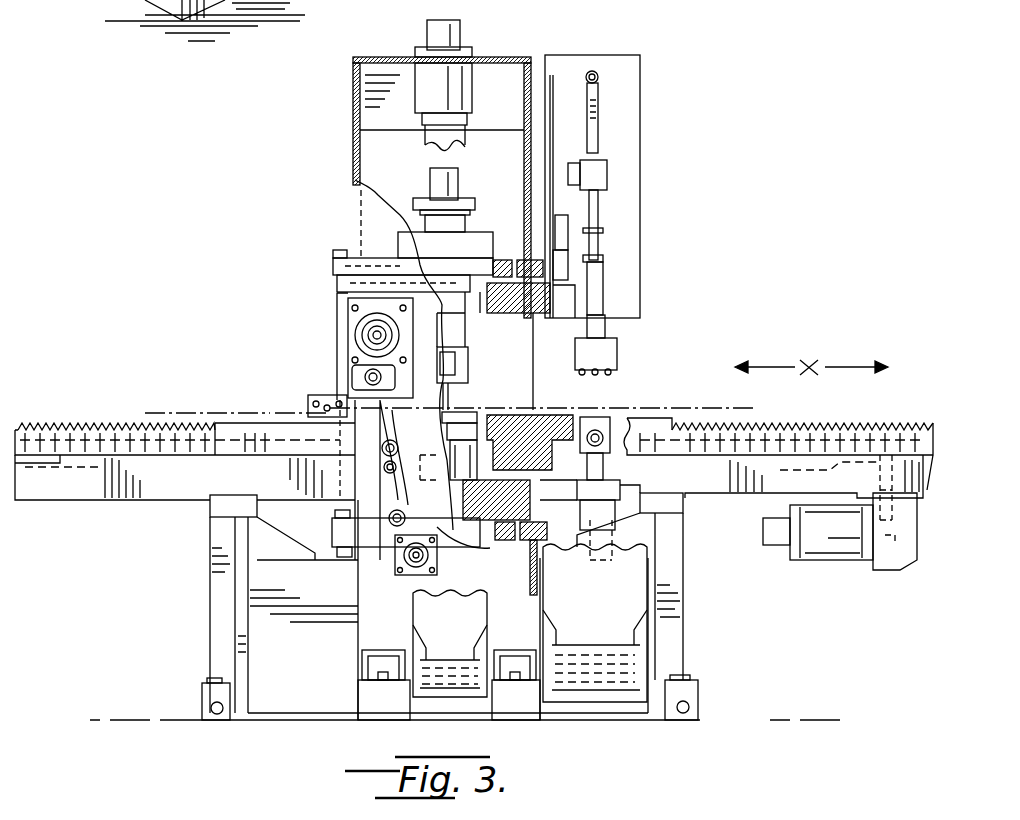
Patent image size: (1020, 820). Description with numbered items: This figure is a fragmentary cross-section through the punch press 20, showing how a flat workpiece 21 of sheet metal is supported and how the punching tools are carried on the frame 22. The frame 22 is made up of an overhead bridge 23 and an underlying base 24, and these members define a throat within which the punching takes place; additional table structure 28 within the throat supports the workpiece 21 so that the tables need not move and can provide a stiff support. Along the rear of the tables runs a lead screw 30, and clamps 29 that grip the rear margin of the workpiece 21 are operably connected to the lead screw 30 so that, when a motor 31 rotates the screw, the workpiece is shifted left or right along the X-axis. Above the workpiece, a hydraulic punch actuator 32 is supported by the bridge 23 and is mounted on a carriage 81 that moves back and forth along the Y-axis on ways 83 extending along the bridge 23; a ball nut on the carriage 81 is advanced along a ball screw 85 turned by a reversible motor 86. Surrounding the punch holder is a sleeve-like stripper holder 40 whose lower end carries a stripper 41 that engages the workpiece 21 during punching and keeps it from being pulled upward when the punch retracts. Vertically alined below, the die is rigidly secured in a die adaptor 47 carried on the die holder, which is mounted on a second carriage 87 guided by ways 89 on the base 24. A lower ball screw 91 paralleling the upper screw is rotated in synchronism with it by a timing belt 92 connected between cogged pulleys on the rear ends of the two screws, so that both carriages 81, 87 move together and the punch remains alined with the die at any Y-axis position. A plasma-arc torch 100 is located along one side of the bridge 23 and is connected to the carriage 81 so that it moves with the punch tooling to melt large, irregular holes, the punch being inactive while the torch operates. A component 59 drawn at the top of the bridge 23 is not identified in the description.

The punch press 20 is at (275, 281).
The workpiece 21 is at (238, 410).
The frame 22 is at (355, 212).
The overhead bridge 23 is at (352, 122).
The base 24 is at (358, 587).
The additional table structure 28 is at (530, 415).
The clamps 29 is at (312, 395).
The lead screw 30 is at (768, 440).
The motor 31 is at (833, 560).
The punch actuator 32 is at (420, 226).
The stripper holder 40 is at (474, 364).
The stripper 41 is at (478, 383).
The die adaptor 47 is at (472, 406).
The actuating cylinder 59 is at (468, 50).
The carriage 81 is at (497, 315).
The ways 83 is at (522, 262).
The ball screw 85 is at (355, 325).
The reversible motor 86 is at (350, 350).
The second carriage 87 is at (457, 524).
The ways 89 is at (497, 540).
The lower ball screw 91 is at (418, 578).
The timing belt 92 is at (372, 493).
The plasma-arc torch 100 is at (620, 355).